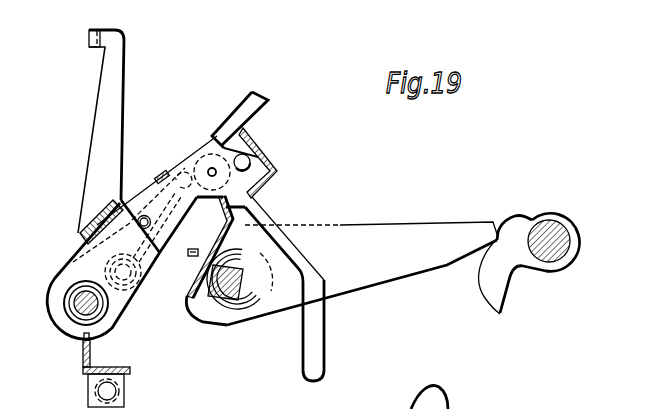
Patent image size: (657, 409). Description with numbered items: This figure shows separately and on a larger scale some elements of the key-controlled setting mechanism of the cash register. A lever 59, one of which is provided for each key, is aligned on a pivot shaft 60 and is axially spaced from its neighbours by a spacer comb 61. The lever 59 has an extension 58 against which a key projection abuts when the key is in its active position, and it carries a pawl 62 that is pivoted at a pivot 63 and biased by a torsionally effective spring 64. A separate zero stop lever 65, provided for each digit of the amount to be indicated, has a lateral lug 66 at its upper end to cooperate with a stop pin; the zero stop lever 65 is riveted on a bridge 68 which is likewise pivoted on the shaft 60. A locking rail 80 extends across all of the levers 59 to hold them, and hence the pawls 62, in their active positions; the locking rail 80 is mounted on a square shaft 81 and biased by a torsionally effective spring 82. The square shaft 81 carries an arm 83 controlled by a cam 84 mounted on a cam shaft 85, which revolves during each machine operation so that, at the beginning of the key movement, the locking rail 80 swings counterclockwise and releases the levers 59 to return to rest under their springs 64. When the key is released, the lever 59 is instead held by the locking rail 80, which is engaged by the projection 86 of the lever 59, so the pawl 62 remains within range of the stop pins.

The extension 58 is at (316, 358).
The lever 59 is at (157, 185).
The pivot shaft 60 is at (75, 290).
The spacer comb 61 is at (83, 357).
The pawl 62 is at (258, 103).
The pivot 63 is at (212, 172).
The torsionally effective spring 64 is at (122, 228).
The zero stop lever 65 is at (105, 113).
The lateral lug 66 is at (89, 41).
The bridge 68 is at (120, 235).
The locking rail 80 is at (222, 241).
The square shaft 81 is at (237, 302).
The torsionally effective spring 82 is at (216, 304).
The arm 83 is at (380, 243).
The cam 84 is at (503, 293).
The cam shaft 85 is at (550, 240).
The projection 86 is at (225, 198).